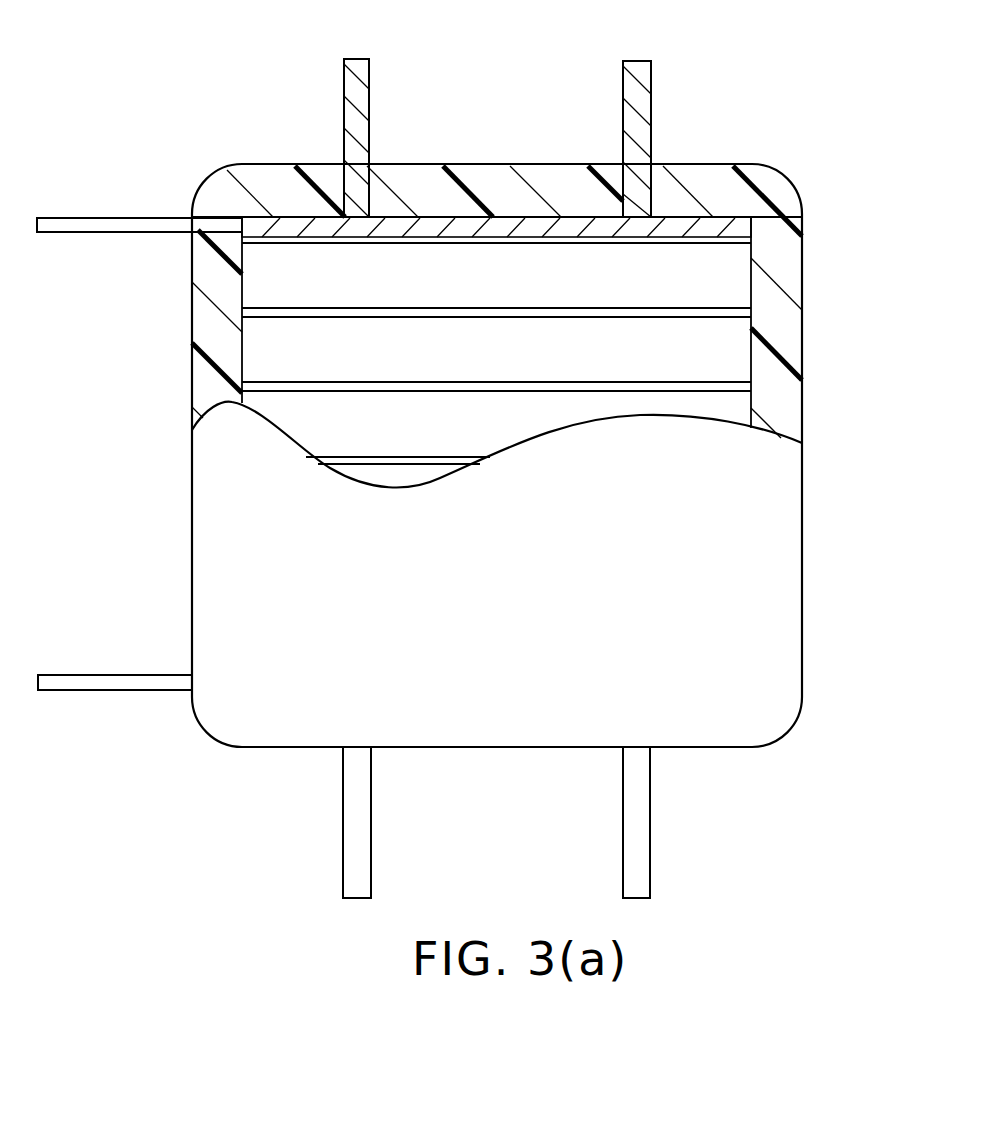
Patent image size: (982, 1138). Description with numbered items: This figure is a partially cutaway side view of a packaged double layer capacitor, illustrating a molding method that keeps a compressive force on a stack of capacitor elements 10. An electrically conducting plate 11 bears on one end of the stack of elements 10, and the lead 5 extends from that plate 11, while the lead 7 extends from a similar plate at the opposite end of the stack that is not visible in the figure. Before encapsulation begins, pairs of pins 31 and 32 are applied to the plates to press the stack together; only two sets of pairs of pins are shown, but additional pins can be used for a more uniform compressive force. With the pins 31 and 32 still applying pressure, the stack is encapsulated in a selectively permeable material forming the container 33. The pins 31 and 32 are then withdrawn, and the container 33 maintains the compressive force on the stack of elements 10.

The lead 5 is at (108, 230).
The lead 7 is at (122, 683).
The capacitor elements 10 is at (735, 290).
The electrically conducting plate 11 is at (732, 222).
The pins 31 is at (628, 118).
The pins 32 is at (353, 107).
The container 33 is at (784, 252).